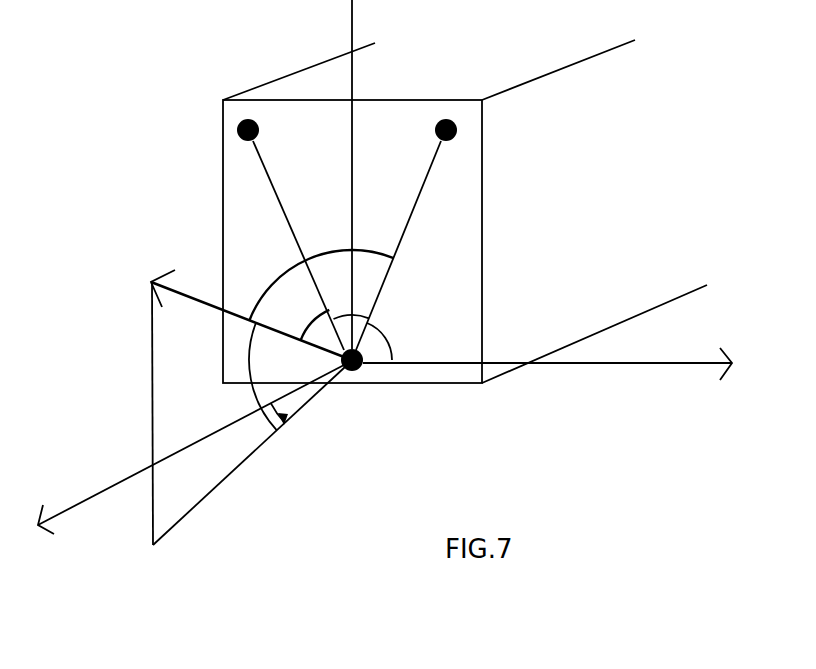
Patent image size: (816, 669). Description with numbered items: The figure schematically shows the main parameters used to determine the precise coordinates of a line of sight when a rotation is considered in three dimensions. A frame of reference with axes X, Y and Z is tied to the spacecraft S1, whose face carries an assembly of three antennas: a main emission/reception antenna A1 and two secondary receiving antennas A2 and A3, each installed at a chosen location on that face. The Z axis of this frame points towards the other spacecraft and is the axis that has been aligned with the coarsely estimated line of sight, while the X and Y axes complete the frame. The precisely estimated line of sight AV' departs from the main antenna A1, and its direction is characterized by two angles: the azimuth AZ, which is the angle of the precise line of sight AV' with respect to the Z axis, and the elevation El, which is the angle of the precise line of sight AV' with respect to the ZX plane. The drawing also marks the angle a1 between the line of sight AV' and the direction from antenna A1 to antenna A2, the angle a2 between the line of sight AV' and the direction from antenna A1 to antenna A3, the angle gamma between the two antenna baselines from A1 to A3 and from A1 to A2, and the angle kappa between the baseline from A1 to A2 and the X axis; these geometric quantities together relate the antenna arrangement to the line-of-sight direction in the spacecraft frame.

The spacecraft S1 is at (292, 72).
The emission/reception antenna A1 is at (362, 367).
The receiving antenna A2 is at (459, 131).
The receiving antenna A3 is at (232, 130).
The precisely estimated line of sight AV' is at (230, 390).
The elevation El is at (251, 386).
The azimuth AZ is at (285, 425).
The angle between AV' and A1-A2 direction a1 is at (371, 248).
The angle between AV' and A1-A3 direction a2 is at (305, 327).
The angle between A1-A3 and A1-A2 directions gamma is at (350, 298).
The angle between A1-A2 direction and X axis kappa is at (400, 332).
The X axis X is at (547, 380).
The Y axis Y is at (373, 174).
The Z axis Z is at (191, 461).